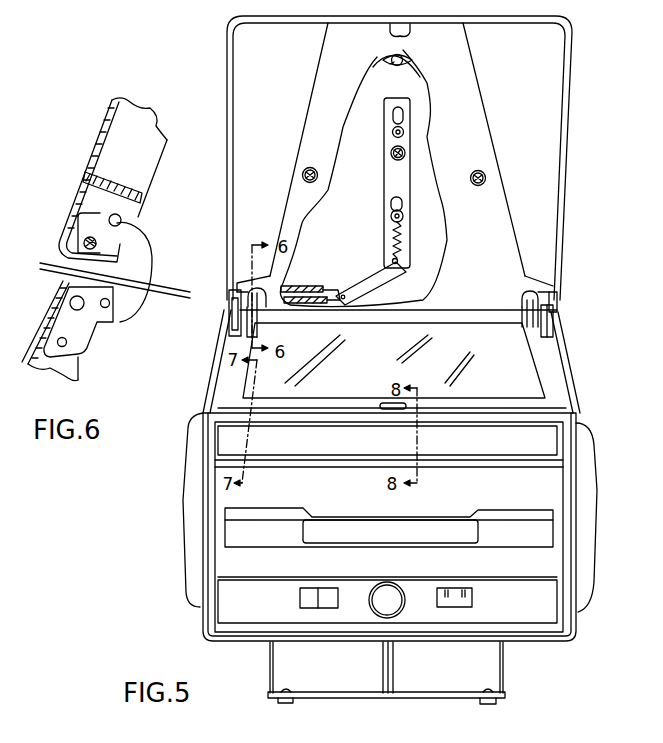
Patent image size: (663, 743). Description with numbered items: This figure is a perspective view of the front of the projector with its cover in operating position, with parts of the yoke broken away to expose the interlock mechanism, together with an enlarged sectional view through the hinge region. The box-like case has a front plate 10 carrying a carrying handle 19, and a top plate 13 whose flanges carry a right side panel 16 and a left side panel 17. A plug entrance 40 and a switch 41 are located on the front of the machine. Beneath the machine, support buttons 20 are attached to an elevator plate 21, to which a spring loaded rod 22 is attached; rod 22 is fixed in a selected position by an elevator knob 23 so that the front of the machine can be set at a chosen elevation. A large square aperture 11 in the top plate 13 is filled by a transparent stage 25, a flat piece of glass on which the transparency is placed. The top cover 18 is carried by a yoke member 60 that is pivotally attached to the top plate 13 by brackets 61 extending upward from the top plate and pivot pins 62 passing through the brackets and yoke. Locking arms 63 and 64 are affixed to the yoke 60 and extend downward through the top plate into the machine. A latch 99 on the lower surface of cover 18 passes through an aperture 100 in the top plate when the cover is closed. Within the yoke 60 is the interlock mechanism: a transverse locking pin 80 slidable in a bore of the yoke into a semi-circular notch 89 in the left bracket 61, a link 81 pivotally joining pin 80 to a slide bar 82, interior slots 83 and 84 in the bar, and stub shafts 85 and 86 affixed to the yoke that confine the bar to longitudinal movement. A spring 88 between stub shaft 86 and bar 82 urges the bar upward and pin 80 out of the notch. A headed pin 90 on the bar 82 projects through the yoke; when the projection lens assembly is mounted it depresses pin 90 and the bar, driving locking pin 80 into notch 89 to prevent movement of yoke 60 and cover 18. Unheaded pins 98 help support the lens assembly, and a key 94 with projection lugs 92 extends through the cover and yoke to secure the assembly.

In FIG. 5, the front plate 10 is at (232, 565).
In FIG. 5, the aperture 11 is at (535, 362).
In FIG. 5, the top plate 13 is at (556, 352).
In FIG. 6, the top plate 13 is at (85, 347).
In FIG. 5, the right side panel 16 is at (587, 493).
In FIG. 5, the left side panel 17 is at (192, 498).
In FIG. 5, the top cover 18 is at (543, 218).
In FIG. 6, the top cover 18 is at (143, 167).
In FIG. 5, the carrying handle 19 is at (535, 534).
In FIG. 5, the support buttons 20 is at (286, 704).
In FIG. 5, the elevator plate 21 is at (331, 699).
In FIG. 5, the spring loaded rod 22 is at (394, 673).
In FIG. 5, the elevator knob 23 is at (395, 604).
In FIG. 5, the transparent stage 25 is at (478, 343).
In FIG. 5, the plug entrance 40 is at (474, 603).
In FIG. 5, the switch 41 is at (300, 599).
In FIG. 5, the yoke member 60 is at (490, 218).
In FIG. 6, the yoke member 60 is at (143, 195).
In FIG. 5, the brackets 61 is at (257, 317).
In FIG. 6, the brackets 61 is at (132, 307).
In FIG. 6, the pivot pins 62 is at (97, 243).
In FIG. 5, the locking arm 63 is at (558, 303).
In FIG. 5, the locking arm 64 is at (224, 323).
In FIG. 5, the transverse locking pin 80 is at (332, 288).
In FIG. 6, the transverse locking pin 80 is at (122, 220).
In FIG. 5, the link 81 is at (372, 273).
In FIG. 5, the slide bar 82 is at (392, 172).
In FIG. 5, the interior slot 83 is at (391, 113).
In FIG. 5, the interior slot 84 is at (389, 203).
In FIG. 5, the stub shaft 85 is at (404, 129).
In FIG. 5, the stub shaft 86 is at (405, 216).
In FIG. 5, the spring 88 is at (404, 238).
In FIG. 6, the notch 89 is at (110, 222).
In FIG. 5, the headed pin 90 is at (407, 151).
In FIG. 5, the projection lugs 92 is at (385, 58).
In FIG. 5, the key 94 is at (393, 64).
In FIG. 5, the unheaded pins 98 is at (305, 170).
In FIG. 5, the latch 99 is at (411, 36).
In FIG. 5, the aperture 100 is at (388, 406).